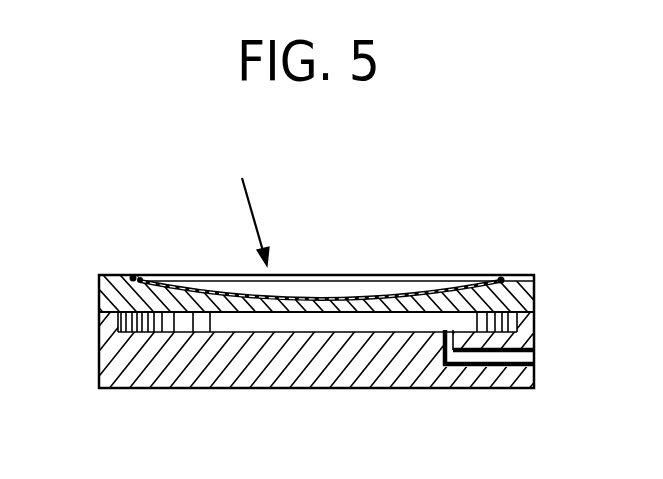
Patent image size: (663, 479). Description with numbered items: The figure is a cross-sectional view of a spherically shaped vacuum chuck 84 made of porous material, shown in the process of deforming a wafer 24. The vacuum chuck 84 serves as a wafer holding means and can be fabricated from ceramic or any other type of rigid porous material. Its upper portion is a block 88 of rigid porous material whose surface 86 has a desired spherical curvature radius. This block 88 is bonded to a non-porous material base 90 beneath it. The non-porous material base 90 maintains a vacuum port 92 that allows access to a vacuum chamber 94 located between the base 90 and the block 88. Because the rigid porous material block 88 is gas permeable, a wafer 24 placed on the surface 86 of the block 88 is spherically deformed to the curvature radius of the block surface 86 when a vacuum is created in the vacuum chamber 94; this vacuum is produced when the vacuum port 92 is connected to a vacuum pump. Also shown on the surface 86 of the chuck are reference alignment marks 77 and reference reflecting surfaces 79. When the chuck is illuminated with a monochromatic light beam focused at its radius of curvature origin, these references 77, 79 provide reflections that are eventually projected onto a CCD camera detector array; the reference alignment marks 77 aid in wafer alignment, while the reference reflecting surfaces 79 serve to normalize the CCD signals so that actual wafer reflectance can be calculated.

The wafer 24 is at (376, 296).
The reference alignment mark 77 is at (498, 280).
The reference reflecting surface 79 is at (132, 278).
The spherically shaped vacuum chuck 84 is at (244, 208).
The surface 86 is at (141, 280).
The block 88 is at (527, 292).
The non-porous material base 90 is at (205, 373).
The vacuum port 92 is at (528, 360).
The vacuum chamber 94 is at (158, 328).